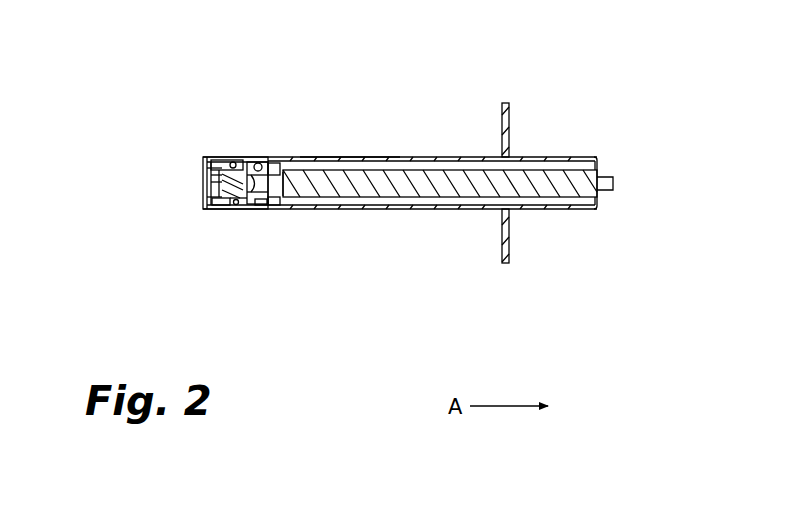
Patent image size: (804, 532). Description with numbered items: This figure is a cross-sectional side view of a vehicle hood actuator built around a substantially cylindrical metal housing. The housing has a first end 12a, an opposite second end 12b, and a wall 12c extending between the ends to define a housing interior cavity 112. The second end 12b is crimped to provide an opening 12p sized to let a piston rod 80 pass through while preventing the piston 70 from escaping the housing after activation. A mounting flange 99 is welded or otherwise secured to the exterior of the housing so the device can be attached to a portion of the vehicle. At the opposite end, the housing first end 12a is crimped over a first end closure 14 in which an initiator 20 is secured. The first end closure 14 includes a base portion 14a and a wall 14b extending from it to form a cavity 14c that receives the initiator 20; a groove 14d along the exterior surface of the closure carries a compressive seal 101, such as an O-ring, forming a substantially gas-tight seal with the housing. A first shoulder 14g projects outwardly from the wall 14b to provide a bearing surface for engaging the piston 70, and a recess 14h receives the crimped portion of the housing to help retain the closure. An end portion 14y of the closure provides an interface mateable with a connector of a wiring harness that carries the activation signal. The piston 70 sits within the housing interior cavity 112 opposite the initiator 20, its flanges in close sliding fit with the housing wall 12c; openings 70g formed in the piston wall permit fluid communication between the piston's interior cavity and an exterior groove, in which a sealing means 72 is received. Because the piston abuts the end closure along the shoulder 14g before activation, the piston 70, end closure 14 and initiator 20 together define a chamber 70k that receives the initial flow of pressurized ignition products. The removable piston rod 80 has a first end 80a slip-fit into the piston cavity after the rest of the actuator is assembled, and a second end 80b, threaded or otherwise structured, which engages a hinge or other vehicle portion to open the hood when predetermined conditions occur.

The housing first end 12a is at (222, 157).
The housing second end 12b is at (598, 158).
The housing wall 12c is at (310, 157).
The opening 12p is at (598, 200).
The first end closure 14 is at (216, 209).
The base portion 14a is at (220, 160).
The wall 14b is at (236, 160).
The cavity 14c is at (220, 198).
The groove 14d is at (232, 211).
The first shoulder 14g is at (268, 208).
The recess 14h is at (218, 158).
The end portion 14y is at (232, 183).
The initiator 20 is at (208, 202).
The piston 70 is at (273, 162).
The opening 70g is at (258, 162).
The chamber 70k is at (288, 210).
The sealing means 72 is at (278, 207).
The piston rod 80 is at (398, 185).
The rod first end 80a is at (280, 186).
The rod second end 80b is at (610, 172).
The mounting flange 99 is at (512, 103).
The compressive seal 101 is at (237, 208).
The housing interior cavity 112 is at (355, 160).